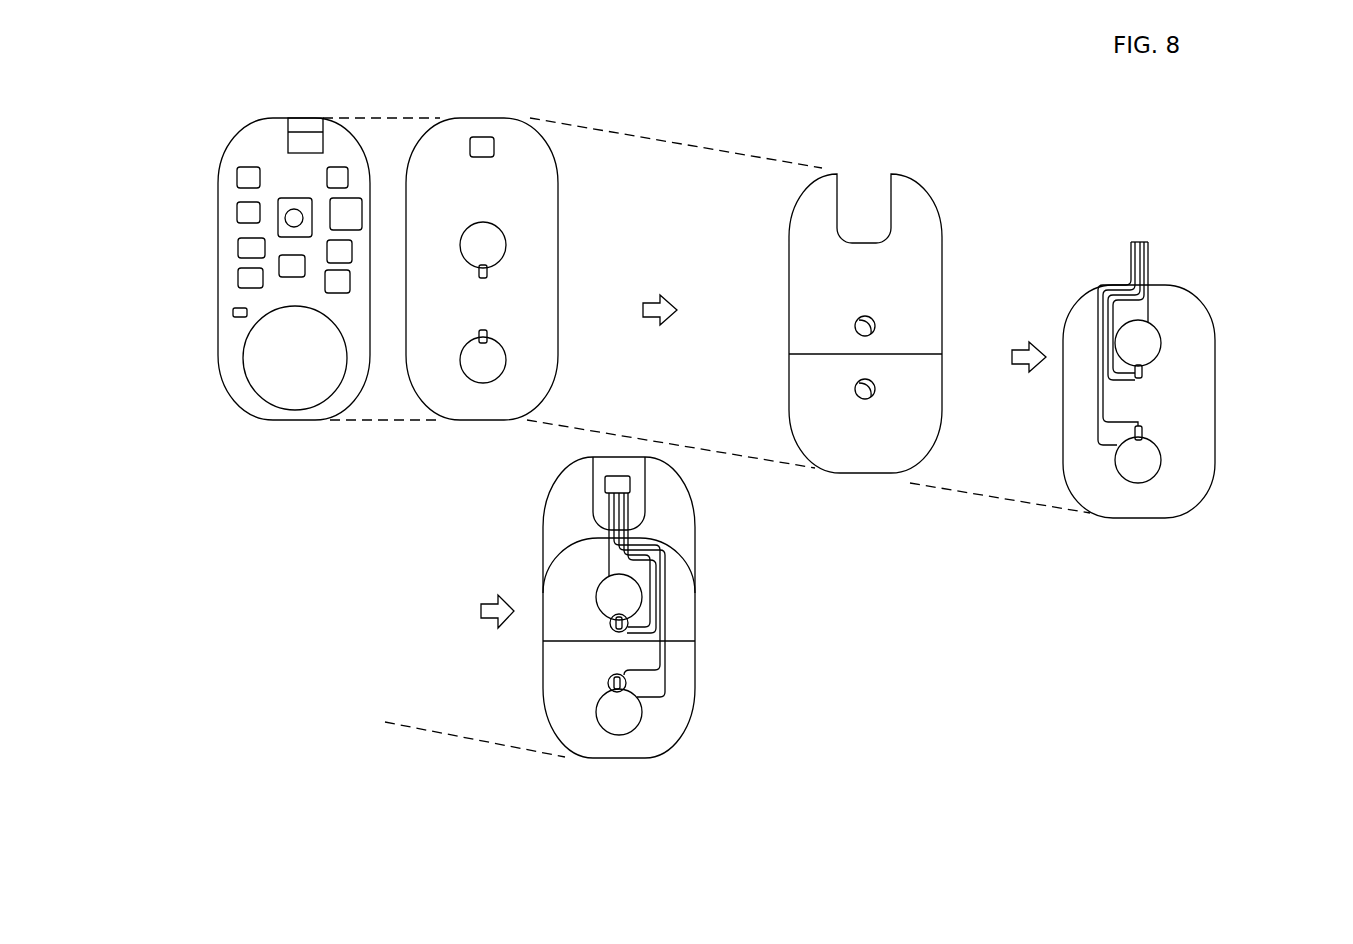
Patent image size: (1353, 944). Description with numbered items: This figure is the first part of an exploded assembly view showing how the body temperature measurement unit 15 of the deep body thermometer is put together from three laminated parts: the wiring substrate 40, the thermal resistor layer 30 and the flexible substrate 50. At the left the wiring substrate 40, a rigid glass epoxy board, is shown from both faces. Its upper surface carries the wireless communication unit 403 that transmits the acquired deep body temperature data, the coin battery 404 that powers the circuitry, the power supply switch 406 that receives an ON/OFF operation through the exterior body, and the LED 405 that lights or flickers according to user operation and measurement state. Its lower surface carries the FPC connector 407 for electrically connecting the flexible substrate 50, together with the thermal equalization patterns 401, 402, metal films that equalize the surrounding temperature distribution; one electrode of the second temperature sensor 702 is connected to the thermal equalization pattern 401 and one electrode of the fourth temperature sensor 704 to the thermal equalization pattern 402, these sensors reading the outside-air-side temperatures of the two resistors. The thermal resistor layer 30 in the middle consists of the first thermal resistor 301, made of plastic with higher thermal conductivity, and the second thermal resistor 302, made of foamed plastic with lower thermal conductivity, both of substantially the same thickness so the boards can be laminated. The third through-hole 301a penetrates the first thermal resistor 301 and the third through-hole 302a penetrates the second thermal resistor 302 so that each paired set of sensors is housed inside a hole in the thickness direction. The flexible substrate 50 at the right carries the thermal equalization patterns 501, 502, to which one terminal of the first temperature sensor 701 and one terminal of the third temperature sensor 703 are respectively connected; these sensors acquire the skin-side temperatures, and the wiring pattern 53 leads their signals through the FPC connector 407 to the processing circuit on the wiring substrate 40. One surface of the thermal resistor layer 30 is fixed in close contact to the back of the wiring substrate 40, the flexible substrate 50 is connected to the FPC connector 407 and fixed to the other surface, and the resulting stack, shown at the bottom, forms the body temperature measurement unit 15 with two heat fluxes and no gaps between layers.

The body temperature measurement unit 15 is at (696, 613).
The thermal resistor layer 30 is at (720, 309).
The first thermal resistor 301 is at (804, 301).
The second thermal resistor 302 is at (806, 397).
The third through-hole 301a is at (872, 315).
The third through-hole 302a is at (872, 378).
The wiring substrate 40 is at (343, 128).
The thermal equalization pattern 401 is at (500, 242).
The thermal equalization pattern 402 is at (500, 366).
The wireless communication unit 403 is at (293, 145).
The coin battery 404 is at (258, 372).
The LED 405 is at (232, 312).
The power supply switch 406 is at (288, 218).
The FPC connector 407 is at (494, 145).
The flexible substrate 50 is at (1200, 308).
The thermal equalization pattern 501 is at (1162, 340).
The thermal equalization pattern 502 is at (1160, 466).
The wiring pattern 53 is at (1143, 313).
The first temperature sensor 701 is at (1145, 370).
The second temperature sensor 702 is at (490, 270).
The third temperature sensor 703 is at (1145, 431).
The fourth temperature sensor 704 is at (490, 333).